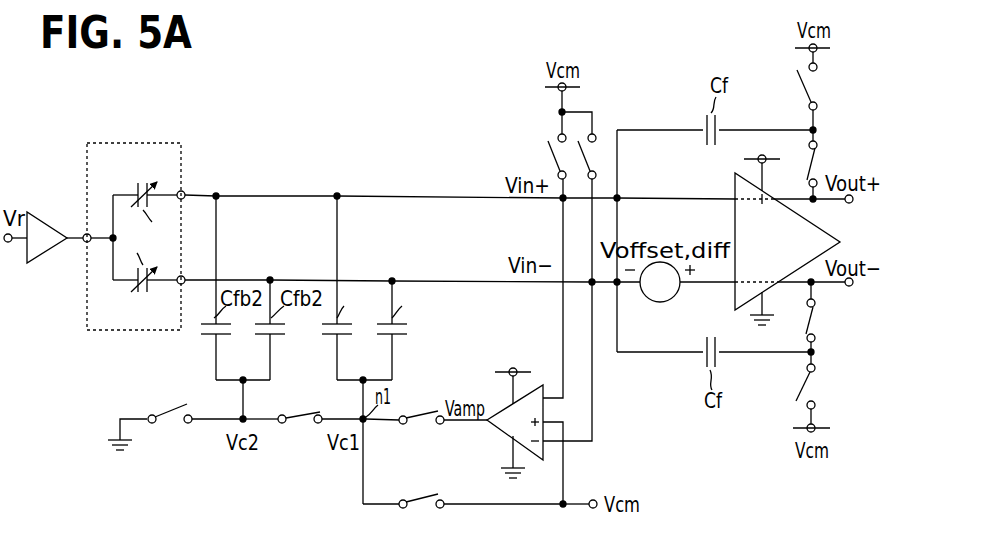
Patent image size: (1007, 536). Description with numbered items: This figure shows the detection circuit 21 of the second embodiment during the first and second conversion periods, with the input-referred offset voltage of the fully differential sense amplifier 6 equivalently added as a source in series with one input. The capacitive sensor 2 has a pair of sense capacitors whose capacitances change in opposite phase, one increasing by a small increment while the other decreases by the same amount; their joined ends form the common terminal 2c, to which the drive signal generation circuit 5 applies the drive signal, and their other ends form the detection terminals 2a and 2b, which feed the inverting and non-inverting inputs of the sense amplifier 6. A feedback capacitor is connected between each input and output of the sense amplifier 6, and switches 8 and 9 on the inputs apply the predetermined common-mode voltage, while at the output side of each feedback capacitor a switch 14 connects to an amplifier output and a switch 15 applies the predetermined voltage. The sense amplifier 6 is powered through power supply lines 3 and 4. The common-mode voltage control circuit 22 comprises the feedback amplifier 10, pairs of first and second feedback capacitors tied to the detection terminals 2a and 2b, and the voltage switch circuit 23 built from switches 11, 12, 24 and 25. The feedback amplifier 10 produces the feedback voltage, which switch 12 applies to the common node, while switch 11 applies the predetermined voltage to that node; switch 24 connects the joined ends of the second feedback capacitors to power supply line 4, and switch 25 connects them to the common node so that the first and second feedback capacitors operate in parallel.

The capacitive sensor 2 is at (133, 143).
The detection terminal 2a is at (184, 192).
The detection terminal 2b is at (184, 277).
The common terminal 2c is at (84, 234).
The power supply line 3 is at (521, 371).
The power supply line 4 is at (108, 440).
The drive signal generation circuit 5 is at (47, 216).
The fully differential sense amplifier 6 is at (733, 216).
The switch 8 is at (545, 150).
The switch 9 is at (598, 153).
The feedback amplifier 10 is at (528, 410).
The switch 11 is at (418, 490).
The switch 12 is at (418, 412).
The switch 14 is at (820, 152).
The switch 15 is at (817, 86).
The detection circuit 21 is at (445, 135).
The common-mode voltage control circuit 22 is at (419, 266).
The voltage switch circuit 23 is at (416, 366).
The switch 24 is at (168, 403).
The switch 25 is at (298, 412).